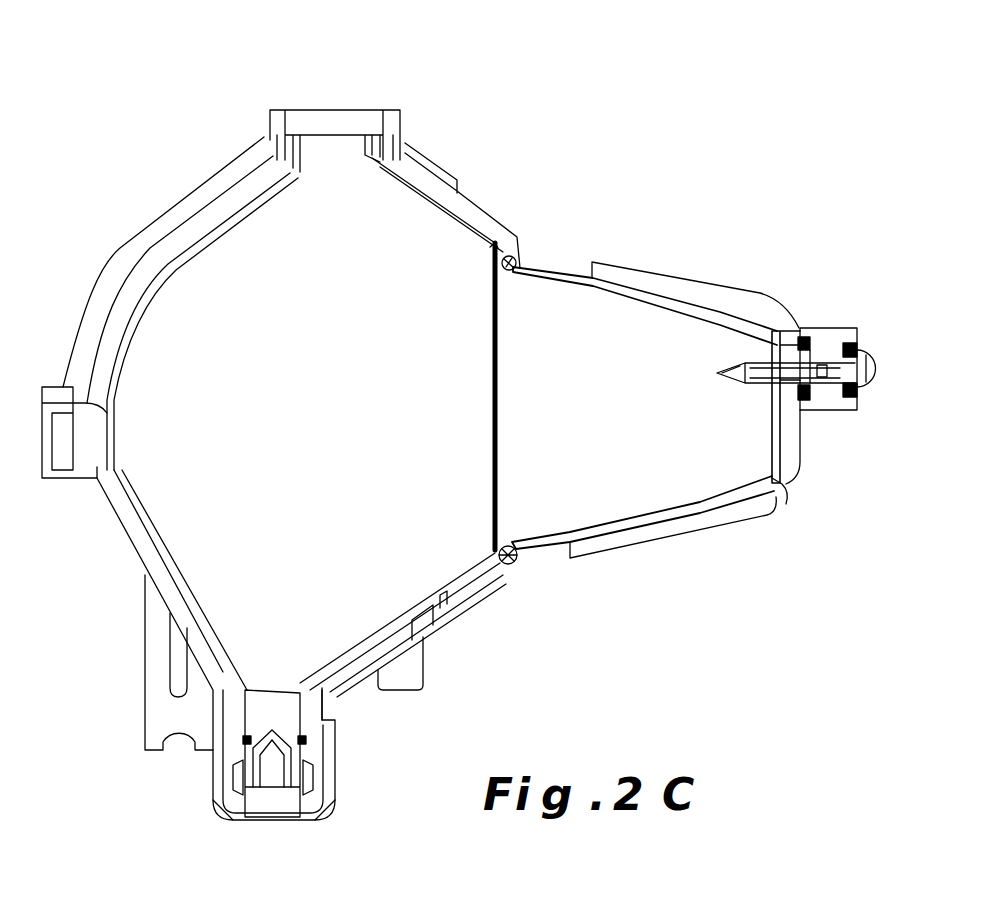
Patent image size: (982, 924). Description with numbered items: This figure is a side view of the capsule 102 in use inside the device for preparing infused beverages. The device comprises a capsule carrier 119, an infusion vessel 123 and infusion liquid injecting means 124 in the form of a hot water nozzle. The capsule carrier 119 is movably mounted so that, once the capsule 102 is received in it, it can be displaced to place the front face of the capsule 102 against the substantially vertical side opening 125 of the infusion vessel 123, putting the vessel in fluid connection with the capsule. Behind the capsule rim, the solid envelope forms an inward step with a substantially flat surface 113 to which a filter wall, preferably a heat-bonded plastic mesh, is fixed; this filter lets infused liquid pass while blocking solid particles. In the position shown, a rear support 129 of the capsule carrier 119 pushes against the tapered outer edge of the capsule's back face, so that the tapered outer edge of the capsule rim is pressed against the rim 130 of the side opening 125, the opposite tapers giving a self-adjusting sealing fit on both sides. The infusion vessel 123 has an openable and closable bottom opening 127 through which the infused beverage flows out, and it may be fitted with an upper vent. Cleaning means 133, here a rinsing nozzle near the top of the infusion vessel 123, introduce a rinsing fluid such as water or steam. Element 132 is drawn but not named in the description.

The capsule 102 is at (558, 273).
The substantially flat surface 113 is at (513, 557).
The capsule carrier 119 is at (693, 270).
The infusion vessel 123 is at (257, 233).
The infusion liquid injecting means 124 is at (800, 380).
The substantially vertical side opening 125 is at (463, 280).
The bottom opening 127 is at (272, 715).
The rear support 129 is at (788, 330).
The rim of the side opening 130 is at (505, 572).
The neck joint 132 is at (781, 485).
The cleaning means 133 is at (350, 122).